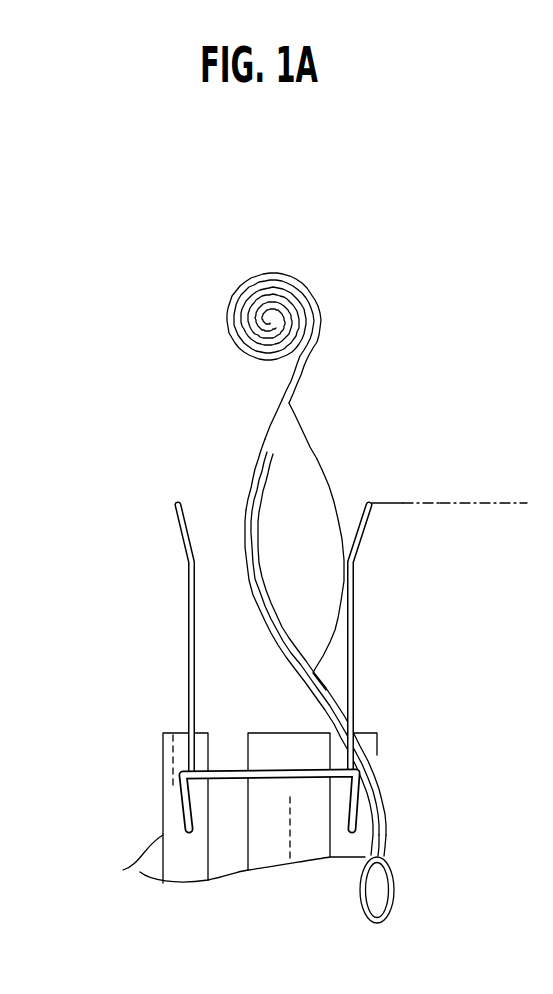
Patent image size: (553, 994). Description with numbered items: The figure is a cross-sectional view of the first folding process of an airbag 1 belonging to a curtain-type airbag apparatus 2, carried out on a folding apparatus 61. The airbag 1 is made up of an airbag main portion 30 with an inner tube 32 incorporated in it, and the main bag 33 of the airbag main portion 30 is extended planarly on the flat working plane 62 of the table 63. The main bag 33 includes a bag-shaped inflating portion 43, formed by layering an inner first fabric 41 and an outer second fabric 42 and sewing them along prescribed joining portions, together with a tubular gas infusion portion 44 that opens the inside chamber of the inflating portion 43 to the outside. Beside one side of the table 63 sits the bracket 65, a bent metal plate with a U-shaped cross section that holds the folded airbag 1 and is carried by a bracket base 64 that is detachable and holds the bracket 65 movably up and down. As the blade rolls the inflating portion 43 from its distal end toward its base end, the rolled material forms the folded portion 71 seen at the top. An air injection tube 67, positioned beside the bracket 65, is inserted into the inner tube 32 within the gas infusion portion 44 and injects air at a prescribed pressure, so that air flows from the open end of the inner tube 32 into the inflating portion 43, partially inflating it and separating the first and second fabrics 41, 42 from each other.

The airbag 1 is at (292, 300).
The folded portion 71 is at (308, 287).
The main bag 33 is at (271, 417).
The airbag main portion 30 is at (265, 437).
The inner tube 32 is at (260, 470).
The first fabric 41 is at (245, 503).
The second fabric 42 is at (302, 429).
The inflating portion 43 is at (313, 462).
The gas infusion portion 44 is at (390, 857).
The air injection tube 67 is at (380, 897).
The airbag apparatus 2 is at (405, 741).
The folding apparatus 61 is at (287, 655).
The working plane 62 is at (404, 503).
The table 63 is at (479, 503).
The bracket base 64 is at (160, 842).
The bracket 65 is at (188, 733).